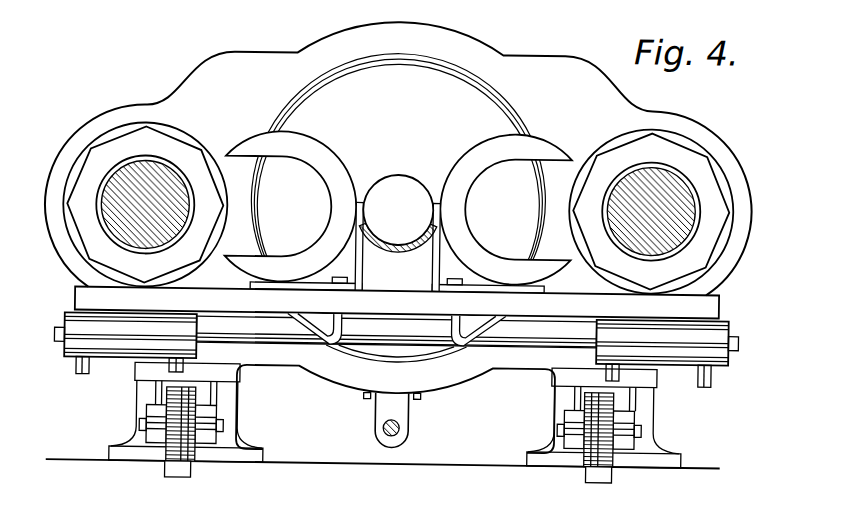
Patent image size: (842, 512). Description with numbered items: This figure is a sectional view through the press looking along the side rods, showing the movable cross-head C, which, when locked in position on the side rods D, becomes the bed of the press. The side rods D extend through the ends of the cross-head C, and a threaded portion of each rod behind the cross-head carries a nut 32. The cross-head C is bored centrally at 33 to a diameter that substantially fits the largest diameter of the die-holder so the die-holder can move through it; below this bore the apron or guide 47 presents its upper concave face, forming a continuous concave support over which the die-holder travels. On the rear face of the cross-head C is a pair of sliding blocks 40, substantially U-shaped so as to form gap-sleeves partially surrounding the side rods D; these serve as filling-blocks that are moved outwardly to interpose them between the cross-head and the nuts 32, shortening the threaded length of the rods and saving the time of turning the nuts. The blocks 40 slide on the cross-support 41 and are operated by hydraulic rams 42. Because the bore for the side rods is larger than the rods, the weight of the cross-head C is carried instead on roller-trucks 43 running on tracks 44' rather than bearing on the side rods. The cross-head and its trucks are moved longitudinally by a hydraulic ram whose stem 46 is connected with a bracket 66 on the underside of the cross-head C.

The movable cross-head C is at (398, 172).
The side rods D is at (112, 222).
The nut 32 is at (398, 207).
The central bore 33 is at (398, 210).
The sliding blocks 40 is at (398, 208).
The cross-support 41 is at (397, 303).
The hydraulic rams 42 is at (197, 350).
The roller-trucks 43 is at (207, 397).
The gear 44' is at (376, 447).
The stem 46 is at (403, 429).
The apron or guide 47 is at (389, 252).
The bracket 66 is at (377, 410).